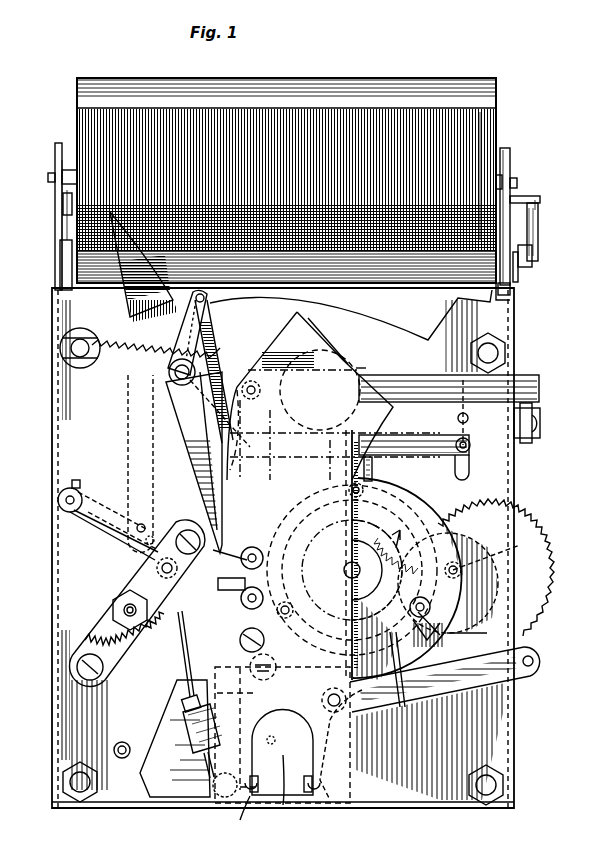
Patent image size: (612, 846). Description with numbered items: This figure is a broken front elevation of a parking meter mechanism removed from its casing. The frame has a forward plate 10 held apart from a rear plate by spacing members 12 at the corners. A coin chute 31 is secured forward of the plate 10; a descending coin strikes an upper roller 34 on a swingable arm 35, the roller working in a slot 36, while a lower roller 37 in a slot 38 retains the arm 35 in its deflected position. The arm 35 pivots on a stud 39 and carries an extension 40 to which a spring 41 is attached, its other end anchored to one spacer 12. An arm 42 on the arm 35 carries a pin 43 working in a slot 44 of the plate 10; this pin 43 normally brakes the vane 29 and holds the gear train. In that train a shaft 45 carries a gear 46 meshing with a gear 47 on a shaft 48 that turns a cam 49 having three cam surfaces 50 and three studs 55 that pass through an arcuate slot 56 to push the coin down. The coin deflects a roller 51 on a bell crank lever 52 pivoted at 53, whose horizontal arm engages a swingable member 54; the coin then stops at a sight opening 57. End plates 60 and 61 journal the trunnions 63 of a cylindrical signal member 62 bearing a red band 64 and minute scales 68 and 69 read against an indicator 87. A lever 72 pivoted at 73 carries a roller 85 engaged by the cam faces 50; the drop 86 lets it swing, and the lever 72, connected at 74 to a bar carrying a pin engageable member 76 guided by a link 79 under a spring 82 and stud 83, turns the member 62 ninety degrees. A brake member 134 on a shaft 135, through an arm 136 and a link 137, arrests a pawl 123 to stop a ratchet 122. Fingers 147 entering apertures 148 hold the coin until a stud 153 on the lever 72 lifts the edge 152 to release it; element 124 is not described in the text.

The forward plate 10 is at (495, 505).
The spacing members 12 is at (68, 350).
The vane 29 is at (470, 418).
The coin chute 31 is at (328, 362).
The upper roller 34 is at (240, 560).
The swingable arm 35 is at (193, 458).
The slot 36 is at (225, 588).
The lower roller 37 is at (241, 600).
The slot 38 is at (240, 638).
The stud 39 is at (178, 380).
The extension 40 is at (197, 342).
The spring 41 is at (148, 350).
The arm 42 is at (205, 380).
The pin 43 is at (470, 445).
The slot 44 is at (469, 470).
The shaft 45 is at (514, 544).
The gear 46 is at (490, 562).
The gear 47 is at (440, 635).
The shaft 48 is at (360, 560).
The cam 49 is at (403, 706).
The cam surfaces 50 is at (420, 516).
The roller 51 is at (230, 668).
The bell crank lever 52 is at (240, 380).
The pivot 53 is at (270, 390).
The swingable member 54 is at (538, 418).
The studs 55 is at (468, 640).
The arcuate slot 56 is at (304, 498).
The sight opening 57 is at (283, 806).
The end plate 60 is at (522, 292).
The end plate 61 is at (56, 234).
The signal member 62 is at (508, 151).
The trunnions 63 is at (48, 180).
The band 64 is at (486, 128).
The scale 68 is at (490, 302).
The scale 69 is at (470, 80).
The lever 72 is at (474, 688).
The pivot 73 is at (340, 730).
The pivot 74 is at (530, 656).
The pin engageable member 76 is at (510, 160).
The guiding link 79 is at (532, 252).
The spring 82 is at (538, 230).
The stud 83 is at (540, 202).
The roller 85 is at (275, 676).
The drop 86 is at (284, 618).
The indicator 87 is at (80, 283).
The ratchet 122 is at (92, 592).
The pawl 123 is at (100, 560).
The link rod 124 is at (184, 662).
The brake member 134 is at (80, 530).
The oscillating shaft 135 is at (58, 504).
The arm 136 is at (90, 492).
The link 137 is at (66, 250).
The fingers 147 is at (254, 795).
The apertures 148 is at (258, 808).
The horizontal edge 152 is at (266, 753).
The stud 153 is at (276, 741).